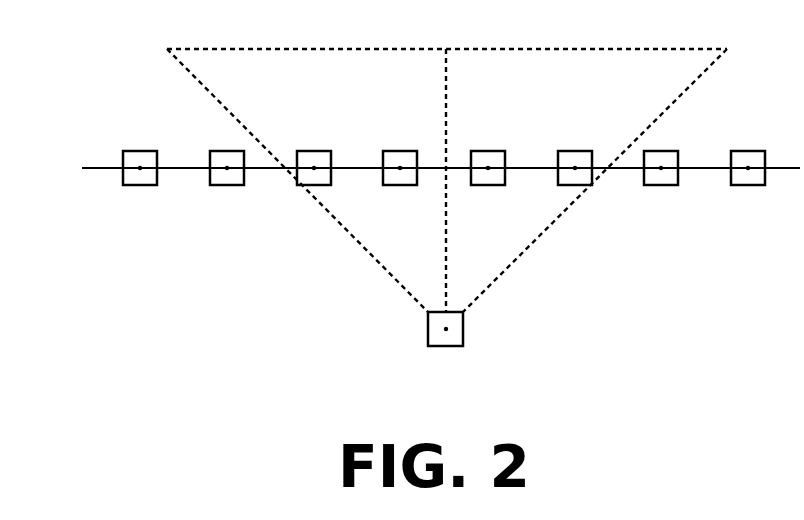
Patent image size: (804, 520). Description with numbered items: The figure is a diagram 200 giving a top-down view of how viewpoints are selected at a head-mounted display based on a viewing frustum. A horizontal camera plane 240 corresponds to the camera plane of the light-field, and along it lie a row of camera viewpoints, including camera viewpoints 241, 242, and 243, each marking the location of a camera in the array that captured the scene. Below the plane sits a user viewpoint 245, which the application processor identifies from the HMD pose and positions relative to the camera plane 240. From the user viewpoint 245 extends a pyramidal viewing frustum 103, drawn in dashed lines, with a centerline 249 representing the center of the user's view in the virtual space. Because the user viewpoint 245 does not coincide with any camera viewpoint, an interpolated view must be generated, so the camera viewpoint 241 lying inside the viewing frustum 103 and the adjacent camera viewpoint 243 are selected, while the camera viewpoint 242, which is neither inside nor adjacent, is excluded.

The diagram 200 is at (50, 334).
The viewing frustum 103 is at (620, 61).
The centerline 249 is at (445, 78).
The camera plane 240 is at (93, 166).
The camera viewpoint 241 is at (318, 150).
The camera viewpoint 242 is at (140, 186).
The camera viewpoint 243 is at (227, 186).
The user viewpoint 245 is at (428, 331).